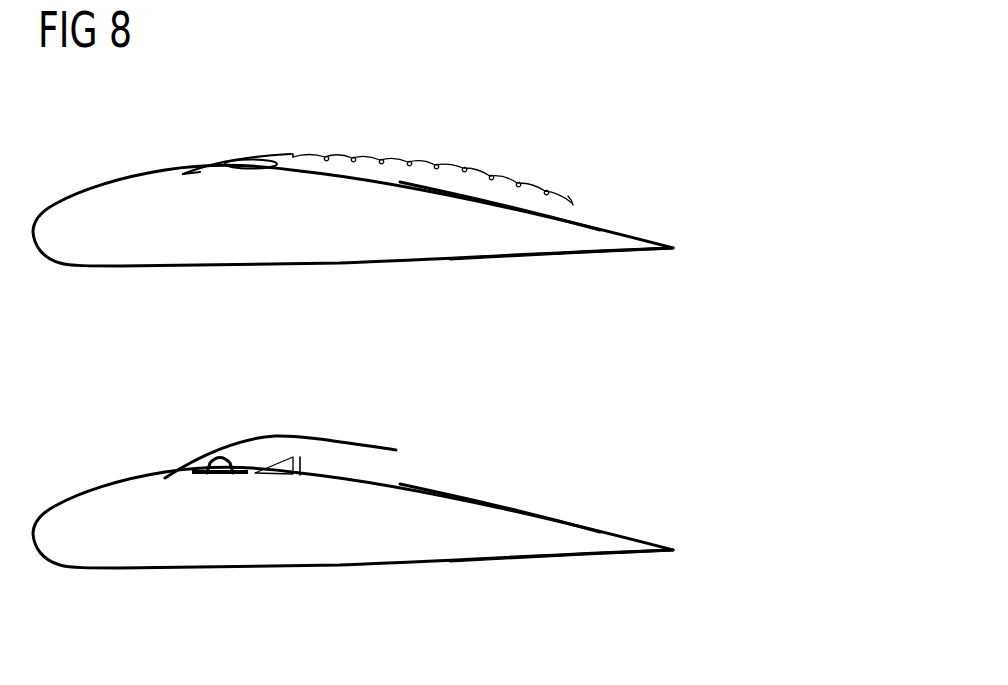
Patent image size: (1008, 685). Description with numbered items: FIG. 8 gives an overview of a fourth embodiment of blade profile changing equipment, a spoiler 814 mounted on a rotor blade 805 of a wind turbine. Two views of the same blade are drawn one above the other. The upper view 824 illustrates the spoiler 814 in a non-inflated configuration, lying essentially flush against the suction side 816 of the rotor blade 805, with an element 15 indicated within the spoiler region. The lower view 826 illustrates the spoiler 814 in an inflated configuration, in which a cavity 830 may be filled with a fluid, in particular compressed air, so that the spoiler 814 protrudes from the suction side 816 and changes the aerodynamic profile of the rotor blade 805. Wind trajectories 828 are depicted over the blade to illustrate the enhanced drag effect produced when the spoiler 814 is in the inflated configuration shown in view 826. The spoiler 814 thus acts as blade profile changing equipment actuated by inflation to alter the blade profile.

The view 824 is at (727, 122).
The view 826 is at (648, 452).
The rotor blade 805 is at (592, 246).
The suction side 816 is at (603, 195).
The spoiler 814 is at (188, 168).
The actuation element 15 is at (281, 157).
The wind trajectories 828 is at (452, 163).
The cavity 830 is at (225, 472).